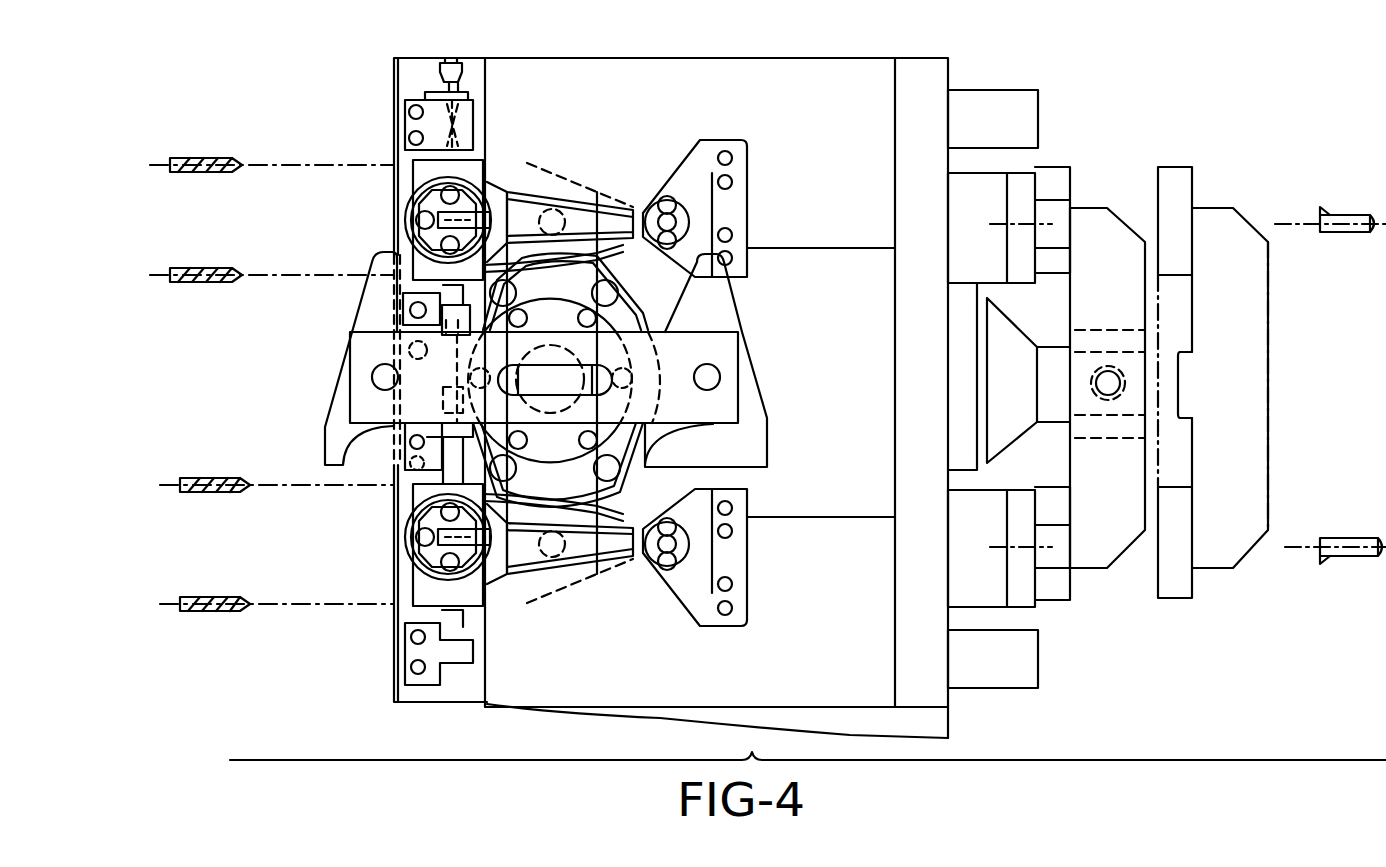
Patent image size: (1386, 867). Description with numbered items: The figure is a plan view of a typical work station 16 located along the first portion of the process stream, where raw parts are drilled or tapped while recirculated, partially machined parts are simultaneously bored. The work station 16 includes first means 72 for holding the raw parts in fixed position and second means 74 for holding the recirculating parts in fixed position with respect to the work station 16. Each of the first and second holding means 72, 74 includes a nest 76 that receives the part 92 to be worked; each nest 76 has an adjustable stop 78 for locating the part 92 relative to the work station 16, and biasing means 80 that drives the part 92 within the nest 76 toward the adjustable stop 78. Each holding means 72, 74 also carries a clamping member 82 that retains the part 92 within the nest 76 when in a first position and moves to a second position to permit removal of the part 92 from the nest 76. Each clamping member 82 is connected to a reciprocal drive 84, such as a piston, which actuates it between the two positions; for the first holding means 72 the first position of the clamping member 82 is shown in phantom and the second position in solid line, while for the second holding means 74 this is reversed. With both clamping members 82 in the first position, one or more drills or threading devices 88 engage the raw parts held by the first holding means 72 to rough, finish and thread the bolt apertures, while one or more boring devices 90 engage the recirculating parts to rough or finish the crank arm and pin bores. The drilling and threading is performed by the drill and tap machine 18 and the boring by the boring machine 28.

The work station 16 is at (755, 50).
The drill and tap machine 18 is at (276, 50).
The boring machine 28 is at (1310, 150).
The first means for holding 72 is at (747, 304).
The second means for holding 74 is at (1118, 574).
The nest 76 is at (390, 176).
The adjustable stop 78 is at (440, 300).
The biasing means 80 is at (462, 122).
The clamping member 82 is at (337, 387).
The reciprocal drive 84 is at (590, 408).
The drill or threading device 88 is at (208, 158).
The boring device 90 is at (1338, 240).
The finished part 92 is at (605, 195).